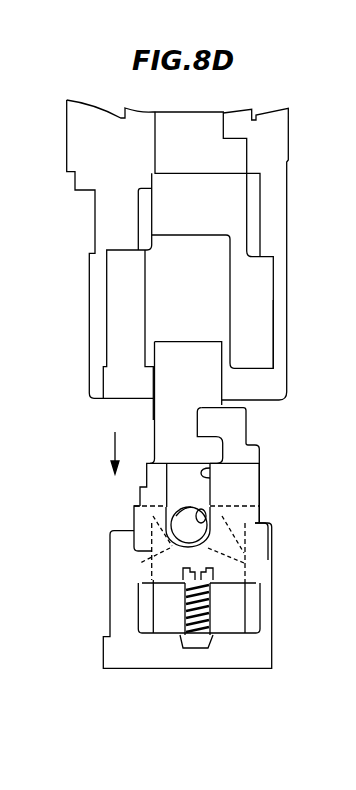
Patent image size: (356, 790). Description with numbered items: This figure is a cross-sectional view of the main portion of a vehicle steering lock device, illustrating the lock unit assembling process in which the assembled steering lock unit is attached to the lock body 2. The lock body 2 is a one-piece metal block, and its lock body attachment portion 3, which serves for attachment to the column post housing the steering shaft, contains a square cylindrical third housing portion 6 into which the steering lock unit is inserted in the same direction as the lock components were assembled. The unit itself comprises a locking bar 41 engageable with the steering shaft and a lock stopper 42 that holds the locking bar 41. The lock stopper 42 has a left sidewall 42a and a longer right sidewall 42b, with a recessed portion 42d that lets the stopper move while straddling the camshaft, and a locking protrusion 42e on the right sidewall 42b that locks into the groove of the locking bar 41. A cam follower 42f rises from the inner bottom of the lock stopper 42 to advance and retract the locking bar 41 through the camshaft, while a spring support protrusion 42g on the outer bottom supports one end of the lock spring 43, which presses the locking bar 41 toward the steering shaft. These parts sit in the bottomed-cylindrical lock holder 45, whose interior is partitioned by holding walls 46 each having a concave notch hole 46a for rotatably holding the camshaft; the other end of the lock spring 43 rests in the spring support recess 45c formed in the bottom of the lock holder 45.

The lock body 2 is at (297, 162).
The lock body attachment portion 3 is at (72, 134).
The third housing portion 6 is at (273, 358).
The locking bar 41 is at (165, 362).
The lock stopper 42 is at (141, 483).
The left sidewall 42a is at (133, 511).
The right sidewall 42b is at (240, 485).
The recessed portion 42d is at (207, 467).
The locking protrusion 42e is at (223, 425).
The cam follower 42f is at (262, 550).
The spring support protrusion 42g is at (185, 570).
The lock spring 43 is at (187, 613).
The lock holder 45 is at (217, 657).
The spring support recess 45c is at (202, 628).
The holding wall 46 is at (227, 602).
The concave notch hole 46a is at (207, 507).